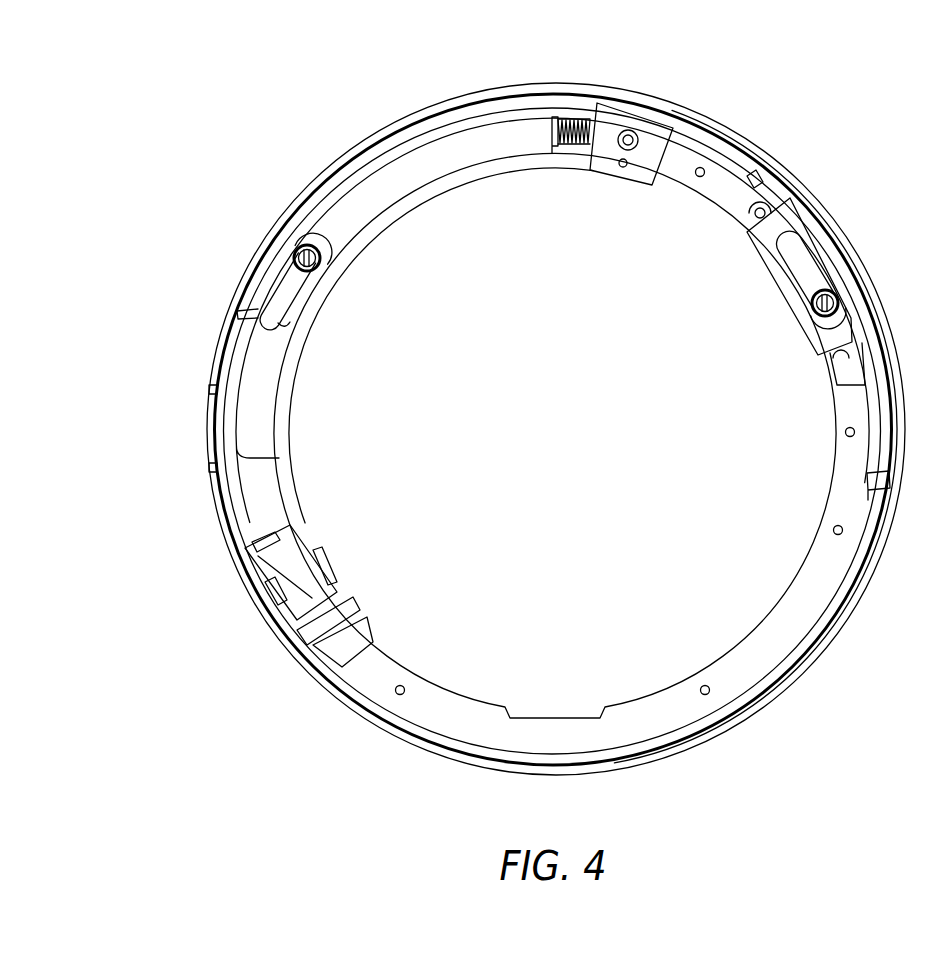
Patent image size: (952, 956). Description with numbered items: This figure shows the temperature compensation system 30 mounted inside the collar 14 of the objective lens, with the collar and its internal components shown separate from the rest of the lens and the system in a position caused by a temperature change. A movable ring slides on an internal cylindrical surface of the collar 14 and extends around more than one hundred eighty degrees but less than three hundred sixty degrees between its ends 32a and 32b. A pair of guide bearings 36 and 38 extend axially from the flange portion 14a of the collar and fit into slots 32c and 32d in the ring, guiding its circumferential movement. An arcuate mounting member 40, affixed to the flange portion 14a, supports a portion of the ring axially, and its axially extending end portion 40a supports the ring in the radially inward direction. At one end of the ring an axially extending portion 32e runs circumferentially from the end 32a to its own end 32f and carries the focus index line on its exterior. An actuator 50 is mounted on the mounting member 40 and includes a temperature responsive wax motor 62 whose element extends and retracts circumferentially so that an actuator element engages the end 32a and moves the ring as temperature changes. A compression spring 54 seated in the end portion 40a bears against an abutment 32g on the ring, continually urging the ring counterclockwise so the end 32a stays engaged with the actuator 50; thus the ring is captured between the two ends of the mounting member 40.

The temperature compensation system 30 is at (753, 100).
The collar 14 is at (816, 655).
The flange portion 14a is at (668, 722).
The arcuate mounting member 40 is at (397, 224).
The axially extending end portion 40a is at (621, 182).
The compression spring 54 is at (566, 117).
The abutment 32g is at (556, 148).
The guide bearing 36 is at (303, 272).
The slot 32c is at (286, 322).
The end of axially extending portion 32f is at (246, 318).
The guide bearing 38 is at (803, 282).
The slot 32d is at (786, 255).
The end of ring 32b is at (872, 494).
The axially extending portion 32e is at (233, 509).
The actuator 50 is at (383, 551).
The end of ring 32a is at (248, 549).
The temperature responsive wax motor 62 is at (356, 631).